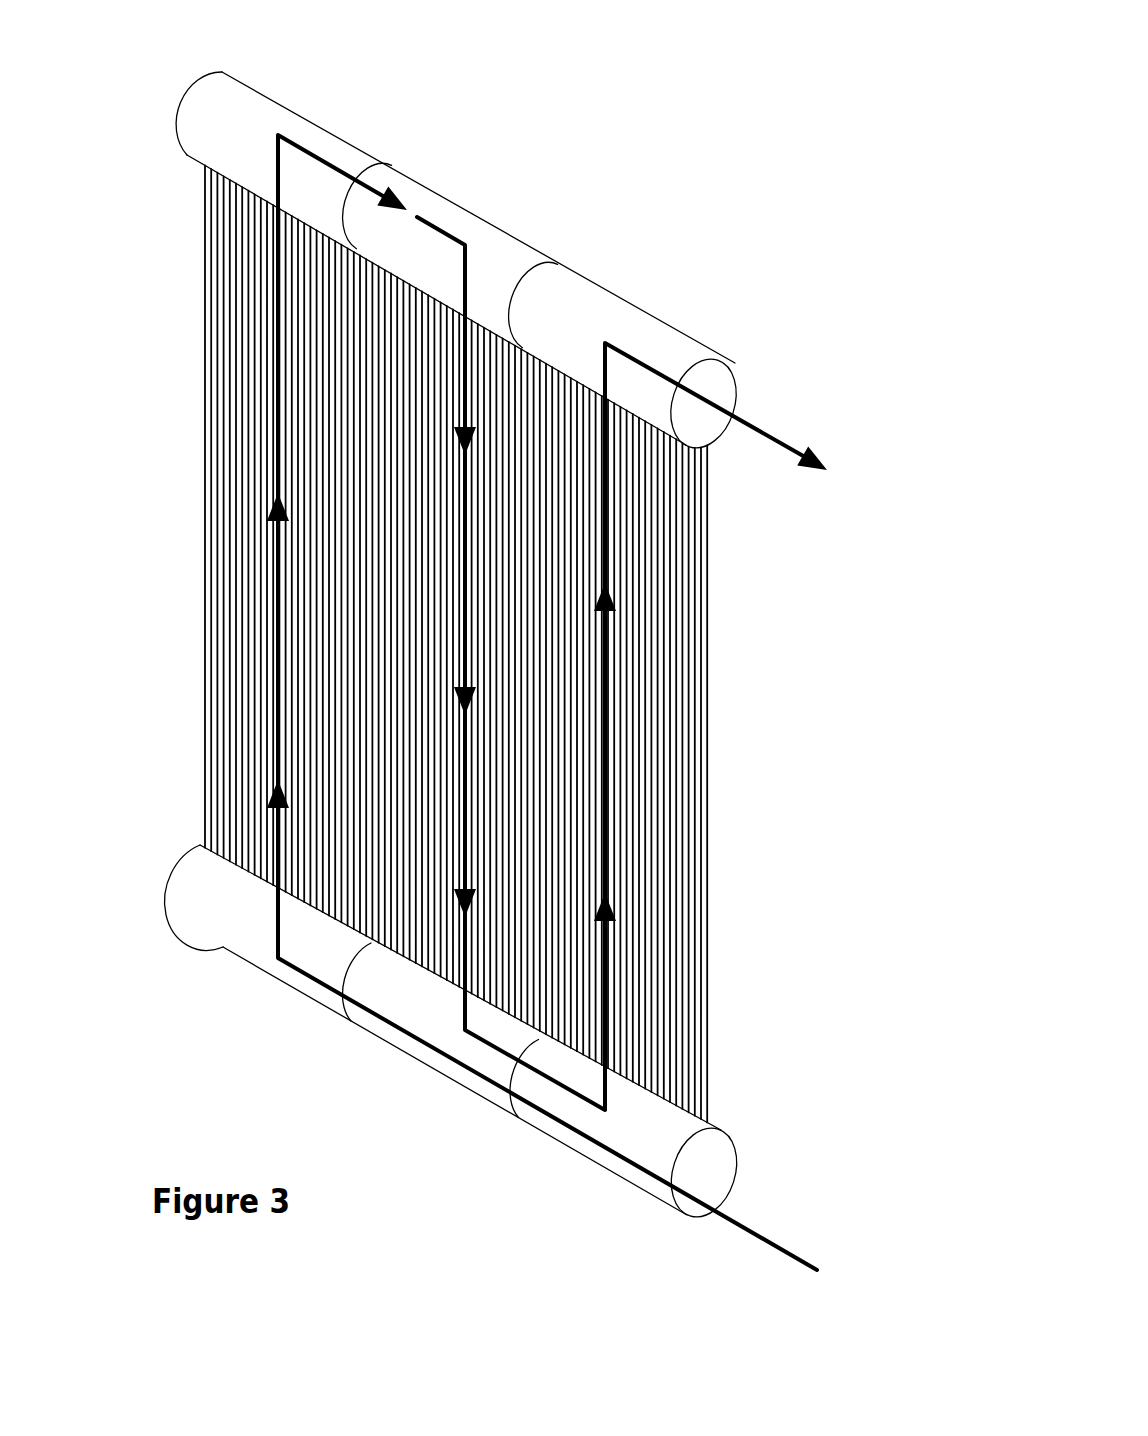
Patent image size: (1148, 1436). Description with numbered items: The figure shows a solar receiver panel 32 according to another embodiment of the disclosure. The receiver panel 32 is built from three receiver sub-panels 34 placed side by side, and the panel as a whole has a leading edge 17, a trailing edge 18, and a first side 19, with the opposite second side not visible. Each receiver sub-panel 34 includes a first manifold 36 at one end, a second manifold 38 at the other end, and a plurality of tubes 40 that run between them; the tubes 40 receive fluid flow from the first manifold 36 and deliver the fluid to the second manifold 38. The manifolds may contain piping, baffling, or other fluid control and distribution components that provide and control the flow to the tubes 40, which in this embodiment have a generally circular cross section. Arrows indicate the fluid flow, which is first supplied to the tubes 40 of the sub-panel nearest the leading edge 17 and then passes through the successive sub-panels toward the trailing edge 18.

The receiver panel 32 is at (614, 140).
The receiver sub-panels 34 is at (313, 120).
The first manifold 36 is at (218, 945).
The second manifold 38 is at (250, 82).
The tubes 40 is at (200, 522).
The leading edge 17 is at (204, 670).
The trailing edge 18 is at (710, 800).
The first side 19 is at (250, 760).